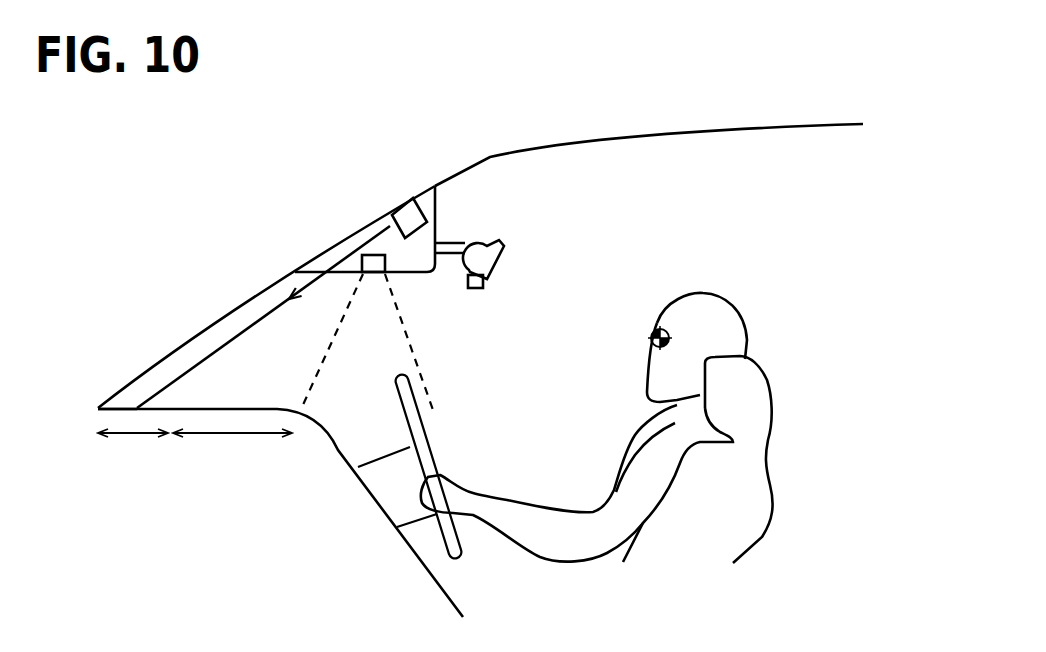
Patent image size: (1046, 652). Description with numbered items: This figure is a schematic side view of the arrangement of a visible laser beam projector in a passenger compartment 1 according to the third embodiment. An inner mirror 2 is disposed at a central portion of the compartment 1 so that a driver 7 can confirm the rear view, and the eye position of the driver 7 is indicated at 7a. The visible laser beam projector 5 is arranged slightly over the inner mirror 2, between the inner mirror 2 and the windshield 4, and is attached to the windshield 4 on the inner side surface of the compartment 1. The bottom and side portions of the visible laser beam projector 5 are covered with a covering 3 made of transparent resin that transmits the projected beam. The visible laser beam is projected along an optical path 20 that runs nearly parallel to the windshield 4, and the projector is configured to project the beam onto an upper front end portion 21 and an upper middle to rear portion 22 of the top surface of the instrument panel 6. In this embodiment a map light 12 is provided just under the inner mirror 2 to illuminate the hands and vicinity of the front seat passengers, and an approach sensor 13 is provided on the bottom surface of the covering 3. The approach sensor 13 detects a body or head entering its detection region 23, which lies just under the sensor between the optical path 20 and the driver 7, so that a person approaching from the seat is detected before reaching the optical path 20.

The passenger compartment 1 is at (653, 170).
The inner mirror 2 is at (493, 226).
The covering 3 is at (440, 198).
The windshield 4 is at (437, 185).
The visible laser beam projector 5 is at (401, 216).
The instrument panel 6 is at (333, 443).
The driver 7 is at (712, 292).
The driver eye point 7a is at (651, 338).
The map light 12 is at (485, 279).
The approach sensor 13 is at (375, 255).
The optical path 20 is at (182, 373).
The upper front end portion 21 is at (133, 435).
The upper middle to rear portion 22 is at (232, 435).
The projection region 23 is at (377, 328).